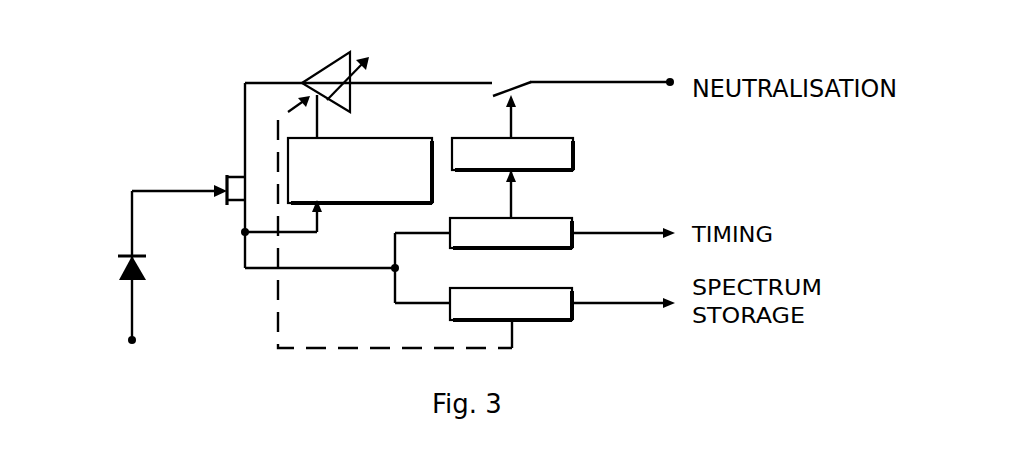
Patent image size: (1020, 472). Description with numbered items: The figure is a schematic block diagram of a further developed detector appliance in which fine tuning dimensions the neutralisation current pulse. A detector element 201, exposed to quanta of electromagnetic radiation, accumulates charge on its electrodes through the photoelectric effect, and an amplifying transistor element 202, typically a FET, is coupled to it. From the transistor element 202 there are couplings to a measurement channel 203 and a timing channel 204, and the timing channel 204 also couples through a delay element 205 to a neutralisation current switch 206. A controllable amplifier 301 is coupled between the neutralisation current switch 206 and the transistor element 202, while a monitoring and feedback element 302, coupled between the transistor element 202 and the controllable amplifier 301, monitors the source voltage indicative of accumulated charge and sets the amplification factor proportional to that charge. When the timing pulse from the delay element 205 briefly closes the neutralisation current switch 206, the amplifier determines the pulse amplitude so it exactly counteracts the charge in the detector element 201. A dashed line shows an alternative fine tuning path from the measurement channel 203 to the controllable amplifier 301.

The detector element 201 is at (118, 262).
The amplifying transistor element 202 is at (240, 204).
The measurement channel 203 is at (535, 288).
The timing channel 204 is at (533, 218).
The delay element 205 is at (533, 138).
The neutralisation current switch 206 is at (508, 83).
The controllable amplifier 301 is at (353, 50).
The monitoring and feedback element 302 is at (392, 138).